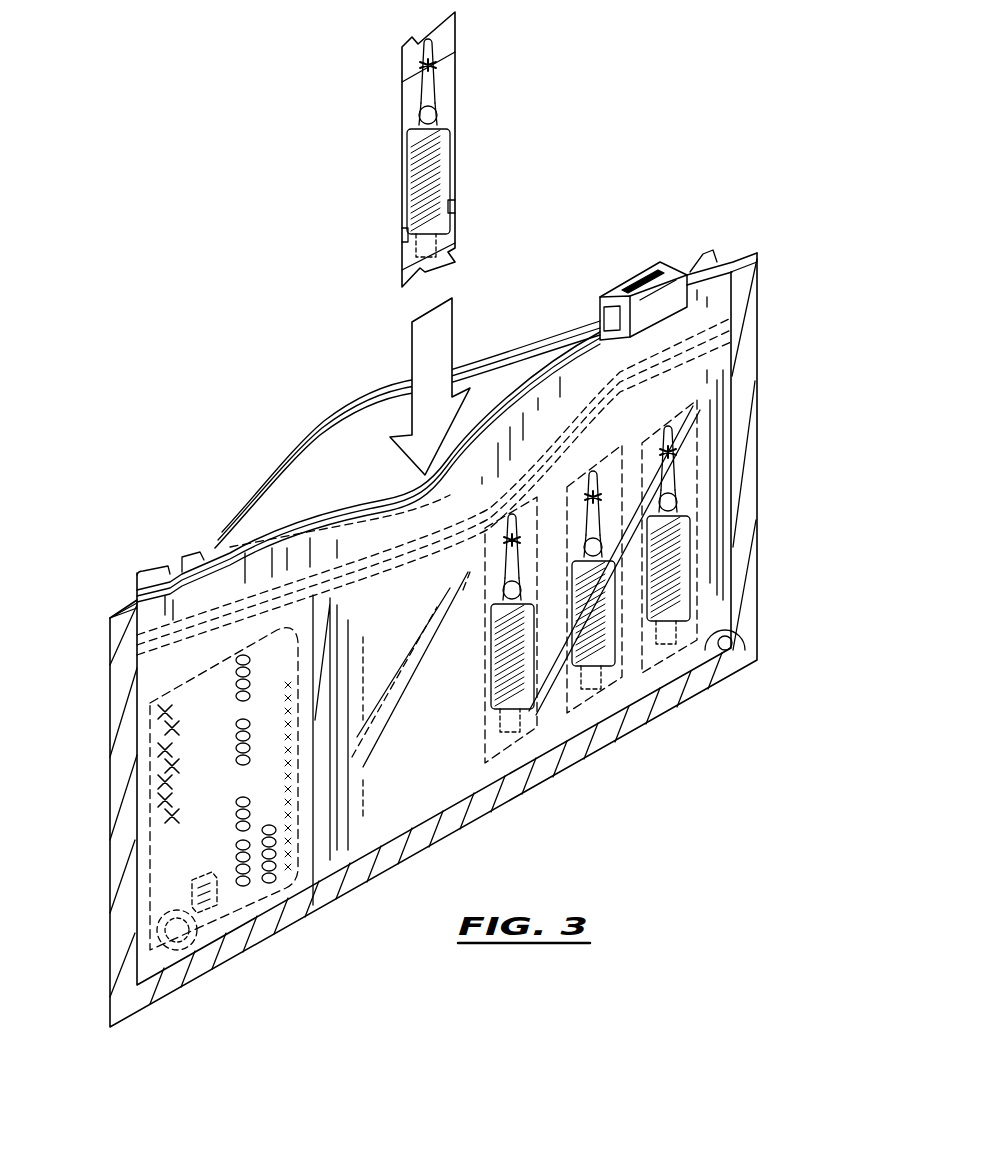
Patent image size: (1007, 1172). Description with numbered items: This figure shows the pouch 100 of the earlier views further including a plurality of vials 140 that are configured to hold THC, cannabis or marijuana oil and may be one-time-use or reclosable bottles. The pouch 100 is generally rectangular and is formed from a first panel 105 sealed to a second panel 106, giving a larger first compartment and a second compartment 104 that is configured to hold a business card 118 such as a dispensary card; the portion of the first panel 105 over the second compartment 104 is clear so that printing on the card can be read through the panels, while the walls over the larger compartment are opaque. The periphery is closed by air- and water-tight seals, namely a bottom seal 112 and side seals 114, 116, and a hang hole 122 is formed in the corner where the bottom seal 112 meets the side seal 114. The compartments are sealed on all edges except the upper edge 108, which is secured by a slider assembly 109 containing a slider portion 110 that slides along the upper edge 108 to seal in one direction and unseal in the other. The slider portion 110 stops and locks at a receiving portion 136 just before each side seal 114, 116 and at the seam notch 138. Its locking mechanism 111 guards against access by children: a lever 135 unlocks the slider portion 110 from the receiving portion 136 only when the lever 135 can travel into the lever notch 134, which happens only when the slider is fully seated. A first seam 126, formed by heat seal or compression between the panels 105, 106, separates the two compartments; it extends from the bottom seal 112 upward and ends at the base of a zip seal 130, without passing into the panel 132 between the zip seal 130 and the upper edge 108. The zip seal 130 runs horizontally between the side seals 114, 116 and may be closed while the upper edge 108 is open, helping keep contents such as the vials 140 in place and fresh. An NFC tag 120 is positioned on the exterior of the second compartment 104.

The pouch 100 is at (50, 541).
The second compartment 104 is at (252, 912).
The first panel 105 is at (448, 765).
The second panel 106 is at (772, 446).
The upper edge 108 is at (282, 520).
The slider assembly 109 is at (689, 202).
The slider portion 110 is at (600, 307).
The locking mechanism 111 is at (667, 318).
The bottom seal 112 is at (697, 680).
The side seal 114 is at (743, 508).
The side seal 116 is at (118, 832).
The business card 118 is at (192, 766).
The NFC tag 120 is at (160, 940).
The hang hole 122 is at (733, 643).
The first seam 126 is at (315, 805).
The zip seal 130 is at (600, 380).
The panel 132 is at (490, 397).
The lever notch 134 is at (192, 557).
The lever 135 is at (640, 280).
The receiving portion 136 is at (148, 570).
The seam notch 138 is at (137, 602).
The vials 140 is at (515, 750).